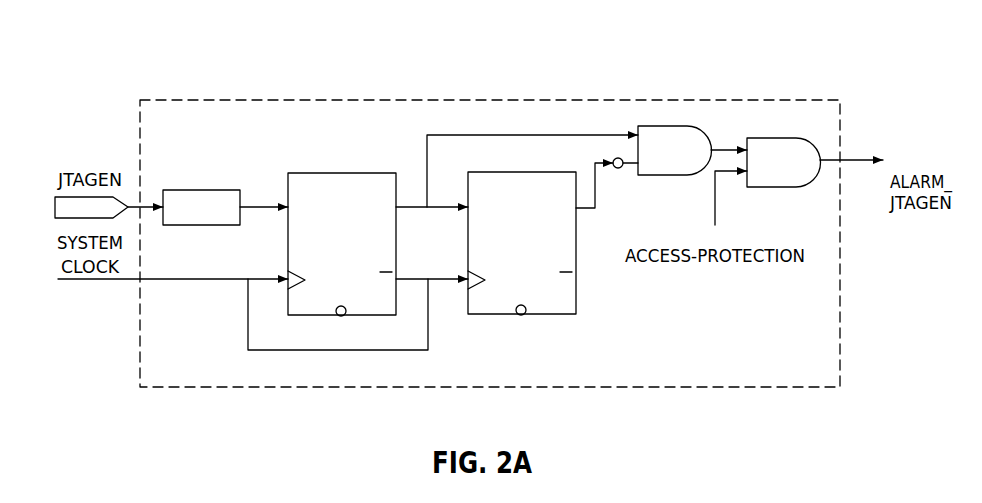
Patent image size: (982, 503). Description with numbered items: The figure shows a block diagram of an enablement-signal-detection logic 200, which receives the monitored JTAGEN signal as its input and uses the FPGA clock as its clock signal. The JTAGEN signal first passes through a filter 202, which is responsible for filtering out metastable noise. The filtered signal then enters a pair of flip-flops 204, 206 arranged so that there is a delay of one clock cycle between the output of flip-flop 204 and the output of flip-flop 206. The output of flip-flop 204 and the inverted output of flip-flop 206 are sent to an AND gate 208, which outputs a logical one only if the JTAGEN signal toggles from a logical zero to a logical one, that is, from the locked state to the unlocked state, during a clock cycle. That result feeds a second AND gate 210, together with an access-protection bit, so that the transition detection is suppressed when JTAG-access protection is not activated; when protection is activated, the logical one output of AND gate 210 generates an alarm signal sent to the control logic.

The enablement-signal-detection logic 200 is at (200, 99).
The filter 202 is at (205, 190).
The flip-flop 204 is at (330, 256).
The flip-flop 206 is at (509, 256).
The AND gate 208 is at (667, 125).
The AND gate 210 is at (770, 138).